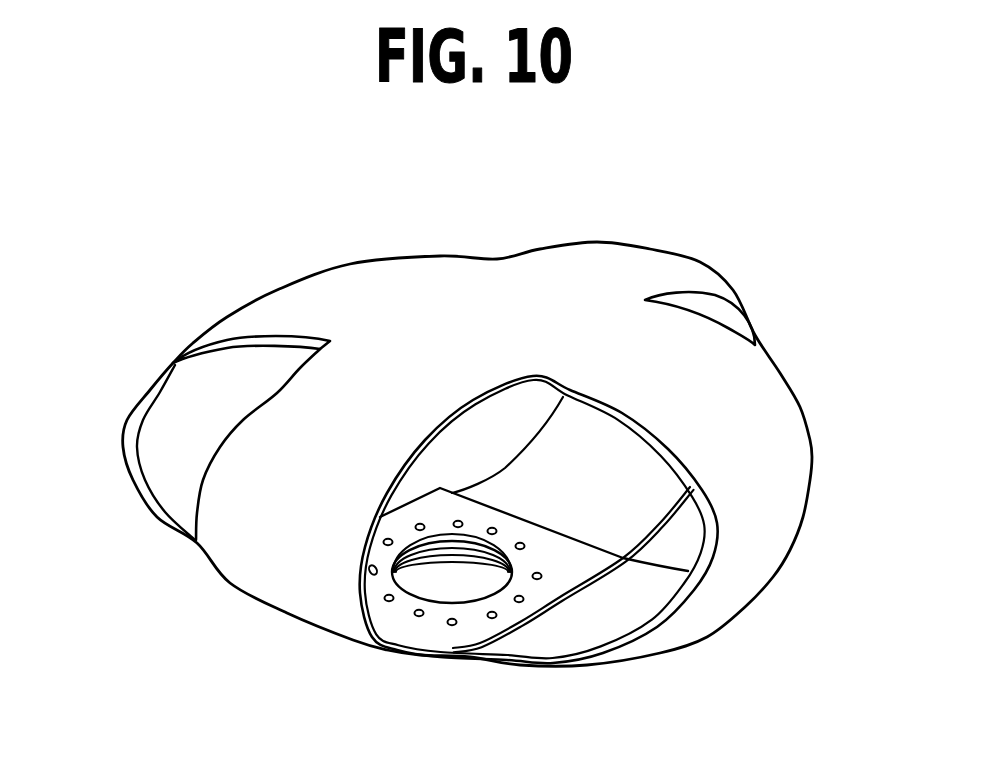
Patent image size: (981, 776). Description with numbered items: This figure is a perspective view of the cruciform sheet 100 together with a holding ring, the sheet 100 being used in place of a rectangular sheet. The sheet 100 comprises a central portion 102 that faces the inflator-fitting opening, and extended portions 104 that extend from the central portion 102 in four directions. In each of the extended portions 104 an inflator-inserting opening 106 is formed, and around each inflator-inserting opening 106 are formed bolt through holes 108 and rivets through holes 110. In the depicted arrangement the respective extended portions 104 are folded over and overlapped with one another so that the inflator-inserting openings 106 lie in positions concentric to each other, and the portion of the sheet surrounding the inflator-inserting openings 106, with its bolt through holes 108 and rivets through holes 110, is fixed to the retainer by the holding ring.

The sheet 100 is at (668, 224).
The central portion 102 is at (470, 312).
The extended portions 104 is at (707, 278).
The inflator-inserting openings 106 is at (450, 588).
The bolt through holes 108 is at (458, 523).
The rivets through holes 110 is at (521, 546).